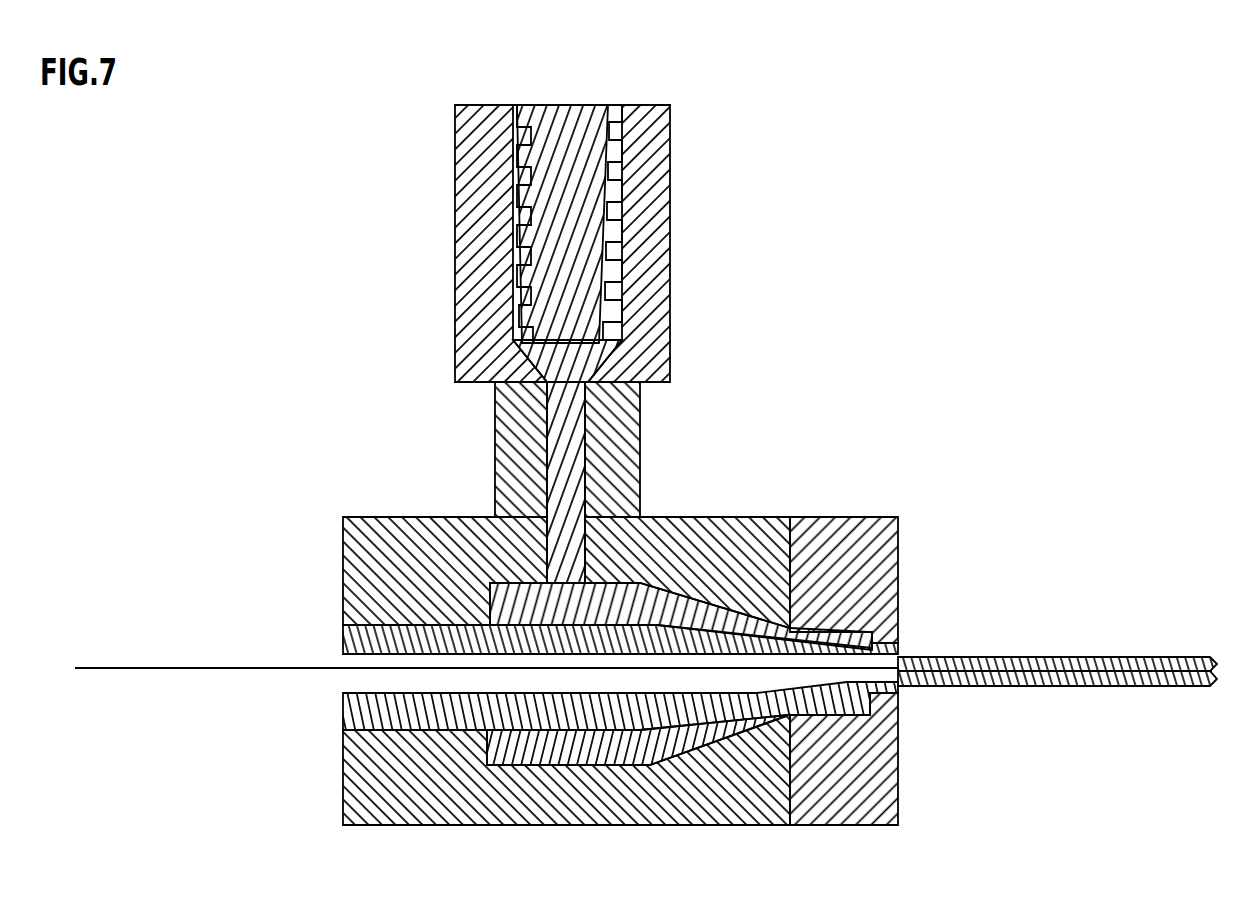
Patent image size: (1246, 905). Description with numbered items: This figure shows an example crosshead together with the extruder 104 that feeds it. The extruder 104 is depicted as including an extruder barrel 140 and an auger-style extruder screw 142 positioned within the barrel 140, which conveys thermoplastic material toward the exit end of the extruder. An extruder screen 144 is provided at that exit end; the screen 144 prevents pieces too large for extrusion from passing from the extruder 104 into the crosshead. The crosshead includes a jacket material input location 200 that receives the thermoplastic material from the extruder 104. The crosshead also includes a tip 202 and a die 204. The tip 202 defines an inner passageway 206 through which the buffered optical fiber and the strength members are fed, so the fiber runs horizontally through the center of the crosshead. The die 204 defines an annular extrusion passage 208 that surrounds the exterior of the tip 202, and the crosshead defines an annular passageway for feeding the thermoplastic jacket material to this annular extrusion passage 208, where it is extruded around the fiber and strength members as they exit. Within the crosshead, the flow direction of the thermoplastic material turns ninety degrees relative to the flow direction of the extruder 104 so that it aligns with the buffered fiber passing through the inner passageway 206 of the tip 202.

The extruder 104 is at (671, 233).
The extruder barrel 140 is at (642, 103).
The extruder screw 142 is at (556, 103).
The extruder screen 144 is at (560, 373).
The jacket material input location 200 is at (587, 424).
The tip 202 is at (340, 638).
The die 204 is at (900, 646).
The inner passageway 206 is at (895, 690).
The annular extrusion passage 208 is at (900, 660).